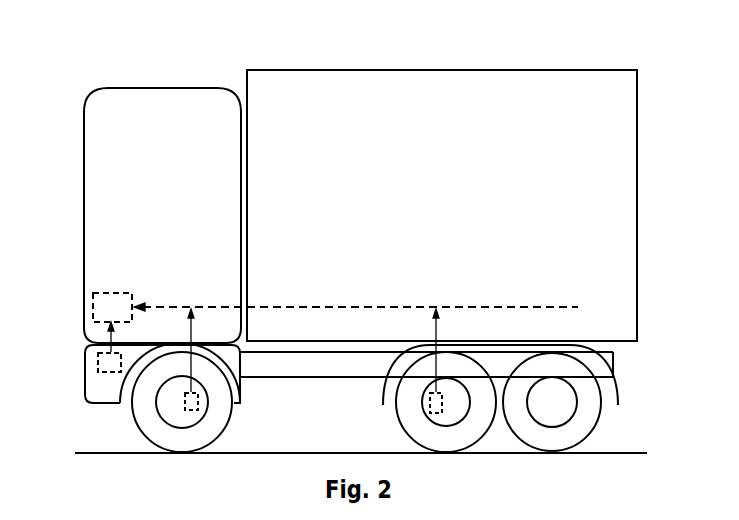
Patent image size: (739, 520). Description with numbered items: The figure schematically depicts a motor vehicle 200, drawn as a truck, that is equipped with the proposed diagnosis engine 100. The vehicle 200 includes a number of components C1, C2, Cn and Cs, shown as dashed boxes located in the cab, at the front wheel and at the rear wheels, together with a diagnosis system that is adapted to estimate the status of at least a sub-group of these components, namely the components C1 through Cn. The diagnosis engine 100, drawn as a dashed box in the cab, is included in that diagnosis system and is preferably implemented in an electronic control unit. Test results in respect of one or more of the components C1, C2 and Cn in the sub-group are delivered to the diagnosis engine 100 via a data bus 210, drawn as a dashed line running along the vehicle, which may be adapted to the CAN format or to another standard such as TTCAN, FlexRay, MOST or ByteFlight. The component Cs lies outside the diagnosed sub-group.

The motor vehicle 200 is at (361, 229).
The diagnosis engine 100 is at (143, 280).
The data bus 210 is at (356, 282).
The component C1 is at (75, 347).
The component C2 is at (228, 377).
The component Cn is at (392, 376).
The component Cs is at (534, 375).